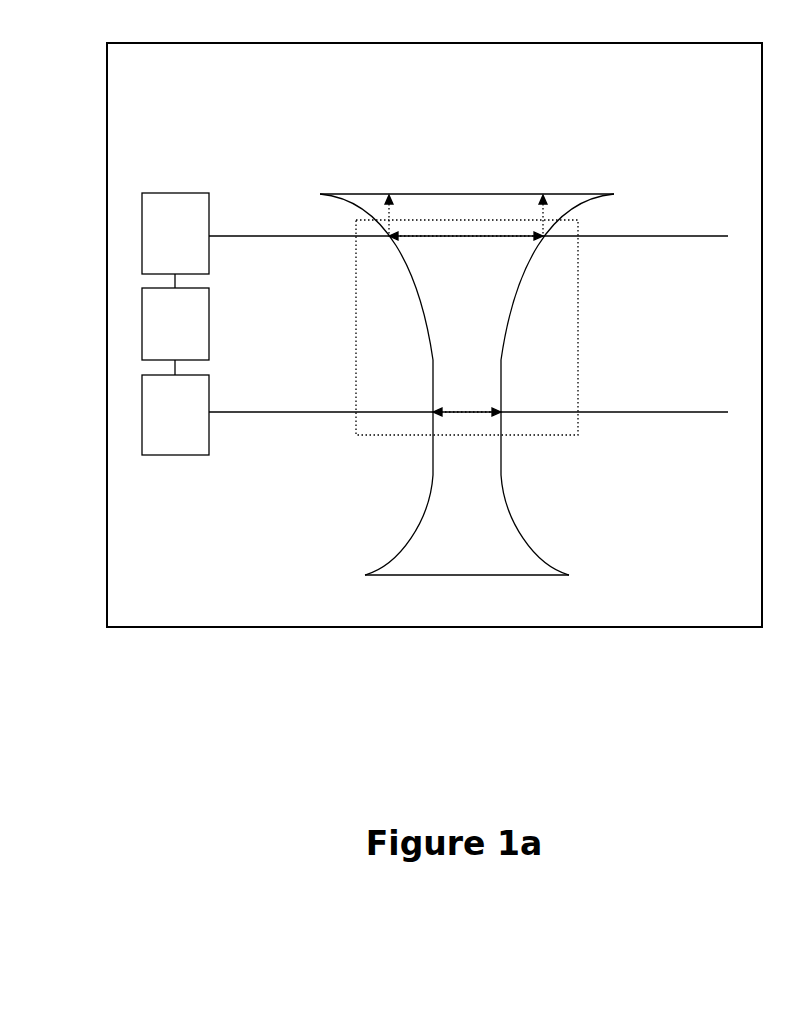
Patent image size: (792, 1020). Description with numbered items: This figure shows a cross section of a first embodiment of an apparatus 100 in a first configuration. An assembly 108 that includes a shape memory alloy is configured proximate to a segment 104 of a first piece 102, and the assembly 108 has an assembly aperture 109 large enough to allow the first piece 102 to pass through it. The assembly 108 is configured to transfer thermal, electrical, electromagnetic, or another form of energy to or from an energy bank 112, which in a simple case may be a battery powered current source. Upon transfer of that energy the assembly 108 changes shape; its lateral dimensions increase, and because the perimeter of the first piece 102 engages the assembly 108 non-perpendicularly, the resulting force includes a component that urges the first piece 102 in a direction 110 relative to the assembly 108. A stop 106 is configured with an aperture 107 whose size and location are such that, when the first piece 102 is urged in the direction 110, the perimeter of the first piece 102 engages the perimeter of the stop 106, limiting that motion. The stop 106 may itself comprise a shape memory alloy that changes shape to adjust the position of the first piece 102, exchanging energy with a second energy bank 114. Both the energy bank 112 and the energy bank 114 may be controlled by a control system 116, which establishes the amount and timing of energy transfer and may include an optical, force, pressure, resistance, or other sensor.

The apparatus 100 is at (655, 627).
The first piece 102 is at (467, 384).
The segment 104 is at (578, 313).
The stop 106 is at (212, 412).
The aperture 107 is at (467, 402).
The assembly 108 is at (268, 236).
The assembly aperture 109 is at (466, 246).
The direction 110 is at (471, 215).
The energy bank 112 is at (175, 193).
The energy bank 114 is at (180, 455).
The control system 116 is at (175, 324).